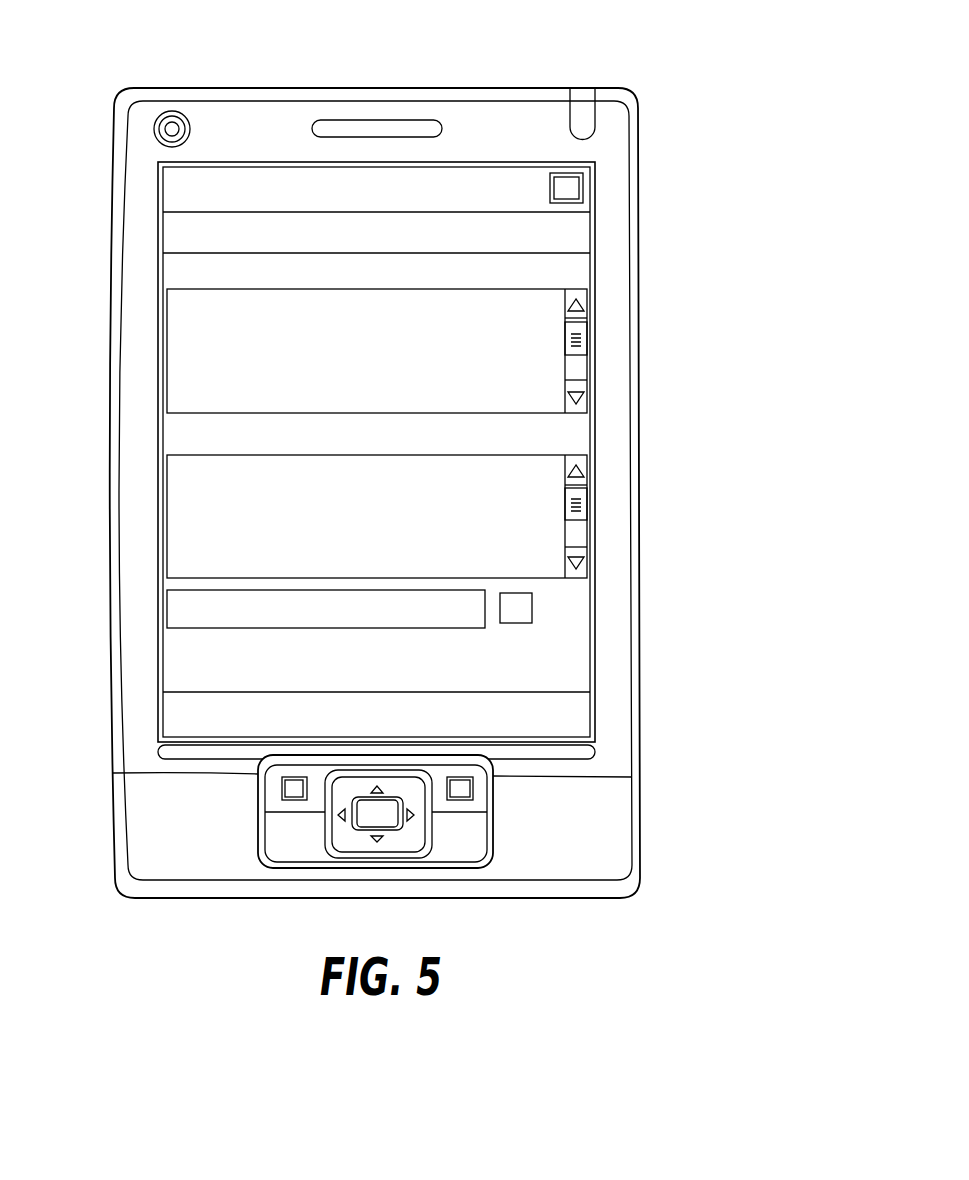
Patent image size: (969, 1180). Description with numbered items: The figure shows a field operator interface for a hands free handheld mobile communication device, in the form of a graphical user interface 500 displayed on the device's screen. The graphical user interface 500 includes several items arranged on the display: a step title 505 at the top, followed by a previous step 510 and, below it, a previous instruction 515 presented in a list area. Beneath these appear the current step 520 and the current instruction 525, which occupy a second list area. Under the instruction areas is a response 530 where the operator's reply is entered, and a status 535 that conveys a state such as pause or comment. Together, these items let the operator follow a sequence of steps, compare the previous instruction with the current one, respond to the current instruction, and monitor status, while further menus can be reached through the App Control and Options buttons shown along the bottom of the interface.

The graphical user interface 500 is at (551, 49).
The step title 505 is at (163, 234).
The previous step 510 is at (163, 272).
The previous instruction 515 is at (182, 342).
The current step 520 is at (163, 434).
The current instruction 525 is at (180, 508).
The response 530 is at (180, 610).
The status 535 is at (163, 648).